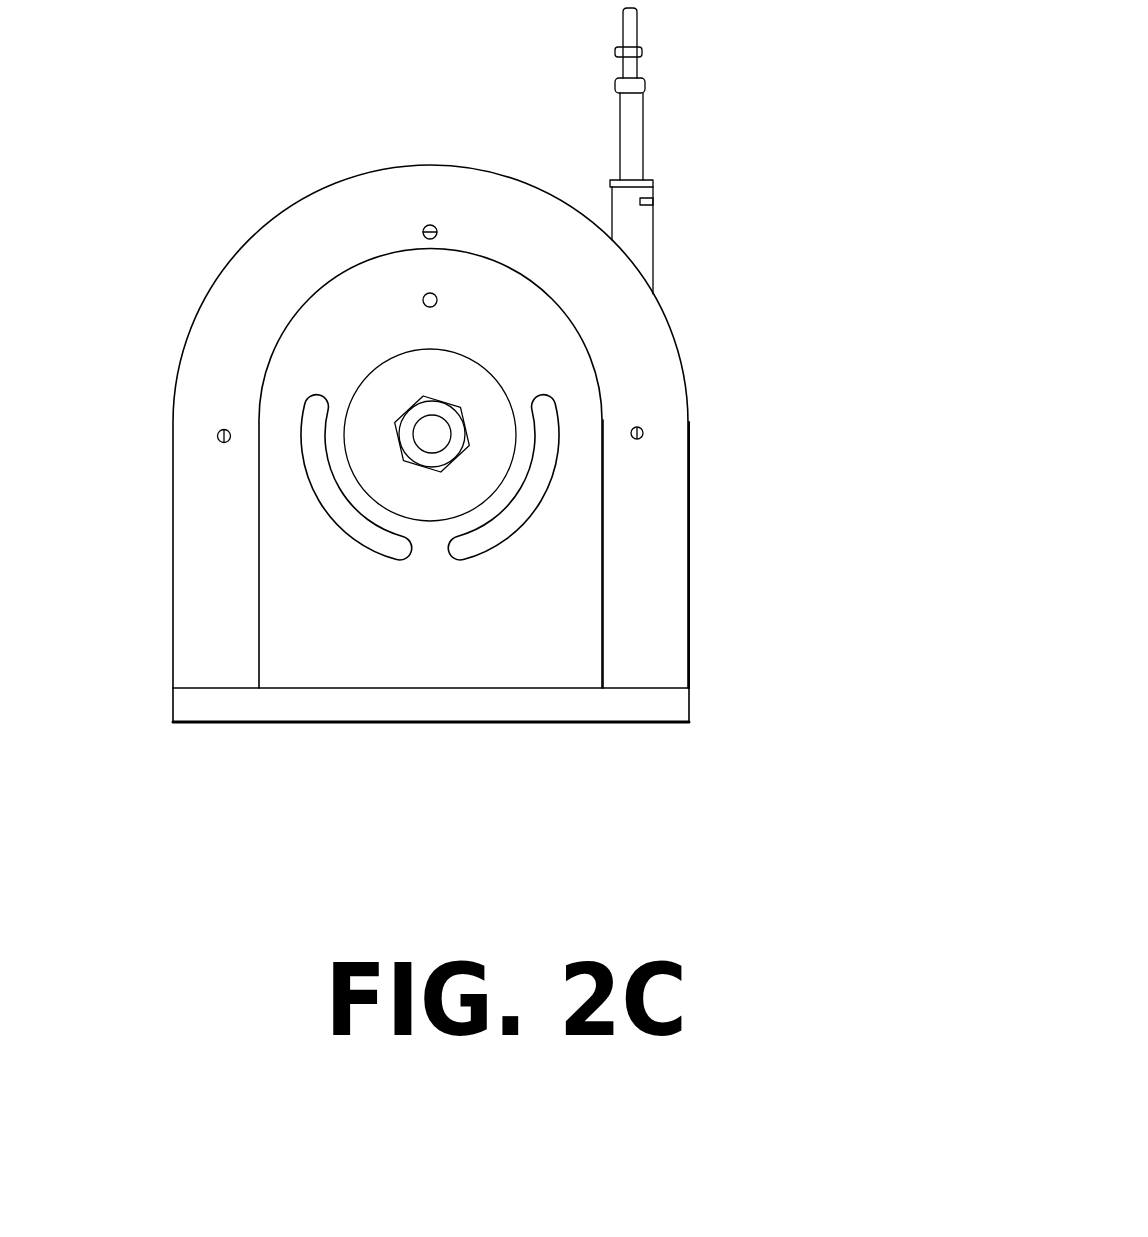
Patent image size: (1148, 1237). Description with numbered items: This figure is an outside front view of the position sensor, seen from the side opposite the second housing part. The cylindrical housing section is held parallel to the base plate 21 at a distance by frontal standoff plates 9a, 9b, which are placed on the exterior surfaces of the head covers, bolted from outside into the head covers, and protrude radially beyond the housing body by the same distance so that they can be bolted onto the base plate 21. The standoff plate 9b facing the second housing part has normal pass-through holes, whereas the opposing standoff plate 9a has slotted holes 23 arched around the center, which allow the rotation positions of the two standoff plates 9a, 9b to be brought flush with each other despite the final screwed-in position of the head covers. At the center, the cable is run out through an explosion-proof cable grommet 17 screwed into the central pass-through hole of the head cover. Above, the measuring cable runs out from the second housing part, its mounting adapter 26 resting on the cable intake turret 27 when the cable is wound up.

The standoff plate 9a is at (572, 592).
The standoff plate 9b is at (633, 648).
The explosion-proof cable grommet 17 is at (448, 417).
The base plate 21 is at (607, 712).
The slotted holes 23 is at (492, 538).
The mounting adapter 26 is at (630, 36).
The cable intake turret 27 is at (638, 235).